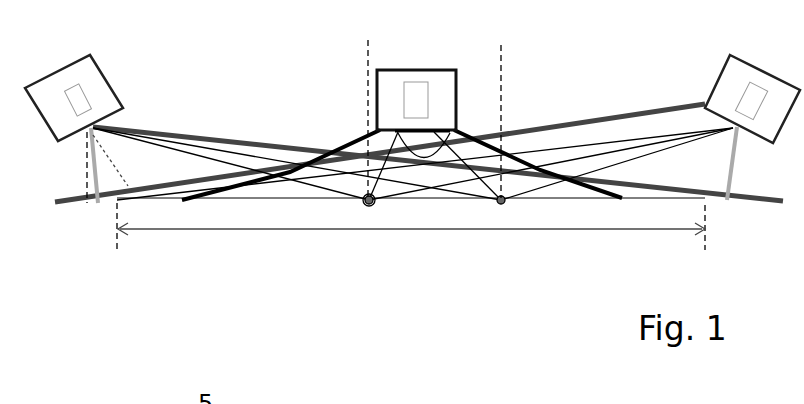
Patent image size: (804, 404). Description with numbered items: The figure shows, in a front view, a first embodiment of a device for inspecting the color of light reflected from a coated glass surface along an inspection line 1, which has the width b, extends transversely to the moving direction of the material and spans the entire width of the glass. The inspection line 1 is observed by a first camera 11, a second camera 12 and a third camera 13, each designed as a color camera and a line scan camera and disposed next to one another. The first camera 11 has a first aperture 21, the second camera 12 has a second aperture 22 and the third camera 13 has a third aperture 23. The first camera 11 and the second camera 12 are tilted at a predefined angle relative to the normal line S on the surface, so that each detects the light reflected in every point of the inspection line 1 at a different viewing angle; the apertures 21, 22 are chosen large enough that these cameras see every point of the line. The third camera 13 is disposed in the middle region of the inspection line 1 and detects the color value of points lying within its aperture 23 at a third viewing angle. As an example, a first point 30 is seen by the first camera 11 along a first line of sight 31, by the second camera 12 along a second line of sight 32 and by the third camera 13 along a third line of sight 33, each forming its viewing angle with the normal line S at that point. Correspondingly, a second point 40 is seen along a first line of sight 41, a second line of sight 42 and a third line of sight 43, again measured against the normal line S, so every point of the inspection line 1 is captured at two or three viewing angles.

The inspection line 1 is at (417, 205).
The first camera 11 is at (97, 82).
The second camera 12 is at (733, 80).
The third camera 13 is at (416, 70).
The first aperture 21 is at (105, 145).
The first line of sight 31 is at (250, 160).
The second aperture 22 is at (703, 135).
The second line of sight 32 is at (623, 162).
The third aperture 23 is at (447, 133).
The third line of sight 33 is at (478, 182).
The first line of sight 41 is at (232, 172).
The second line of sight 42 is at (572, 172).
The third line of sight 43 is at (366, 197).
The first point 30 is at (501, 203).
The second point 40 is at (366, 203).
The width b is at (527, 235).
The normal line S is at (368, 50).